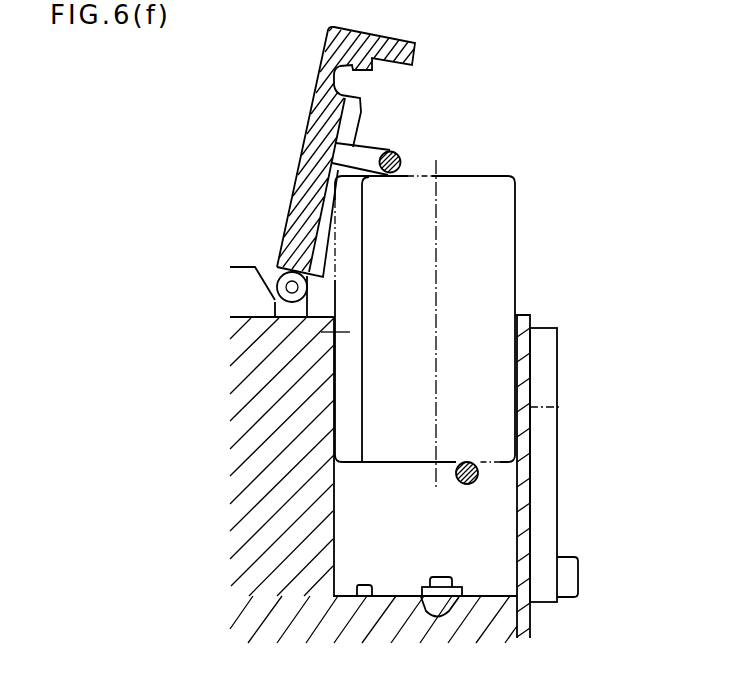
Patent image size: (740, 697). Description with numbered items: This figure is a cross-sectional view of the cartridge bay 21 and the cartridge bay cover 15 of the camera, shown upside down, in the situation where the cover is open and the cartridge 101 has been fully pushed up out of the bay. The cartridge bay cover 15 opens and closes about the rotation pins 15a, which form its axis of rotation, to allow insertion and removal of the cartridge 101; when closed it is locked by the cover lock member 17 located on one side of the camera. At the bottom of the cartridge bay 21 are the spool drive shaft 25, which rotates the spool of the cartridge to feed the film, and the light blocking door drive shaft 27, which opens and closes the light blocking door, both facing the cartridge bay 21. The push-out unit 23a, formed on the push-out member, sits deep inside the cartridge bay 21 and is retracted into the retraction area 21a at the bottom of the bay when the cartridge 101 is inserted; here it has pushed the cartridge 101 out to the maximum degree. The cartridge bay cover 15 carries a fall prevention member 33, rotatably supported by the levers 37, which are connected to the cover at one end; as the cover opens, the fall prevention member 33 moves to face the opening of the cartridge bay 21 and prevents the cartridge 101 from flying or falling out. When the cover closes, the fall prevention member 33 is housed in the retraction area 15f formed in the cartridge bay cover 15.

The cartridge bay cover 15 is at (413, 46).
The retraction area 15f is at (345, 77).
The rotation pins 15a is at (277, 270).
The levers 37 is at (375, 152).
The fall prevention member 33 is at (404, 166).
The cartridge 101 is at (512, 210).
The cover lock member 17 is at (546, 345).
The push-out unit 23a is at (478, 481).
The cartridge bay 21 is at (493, 522).
The spool drive shaft 25 is at (457, 578).
The light blocking door drive shaft 27 is at (352, 587).
The retraction area 21a is at (445, 606).